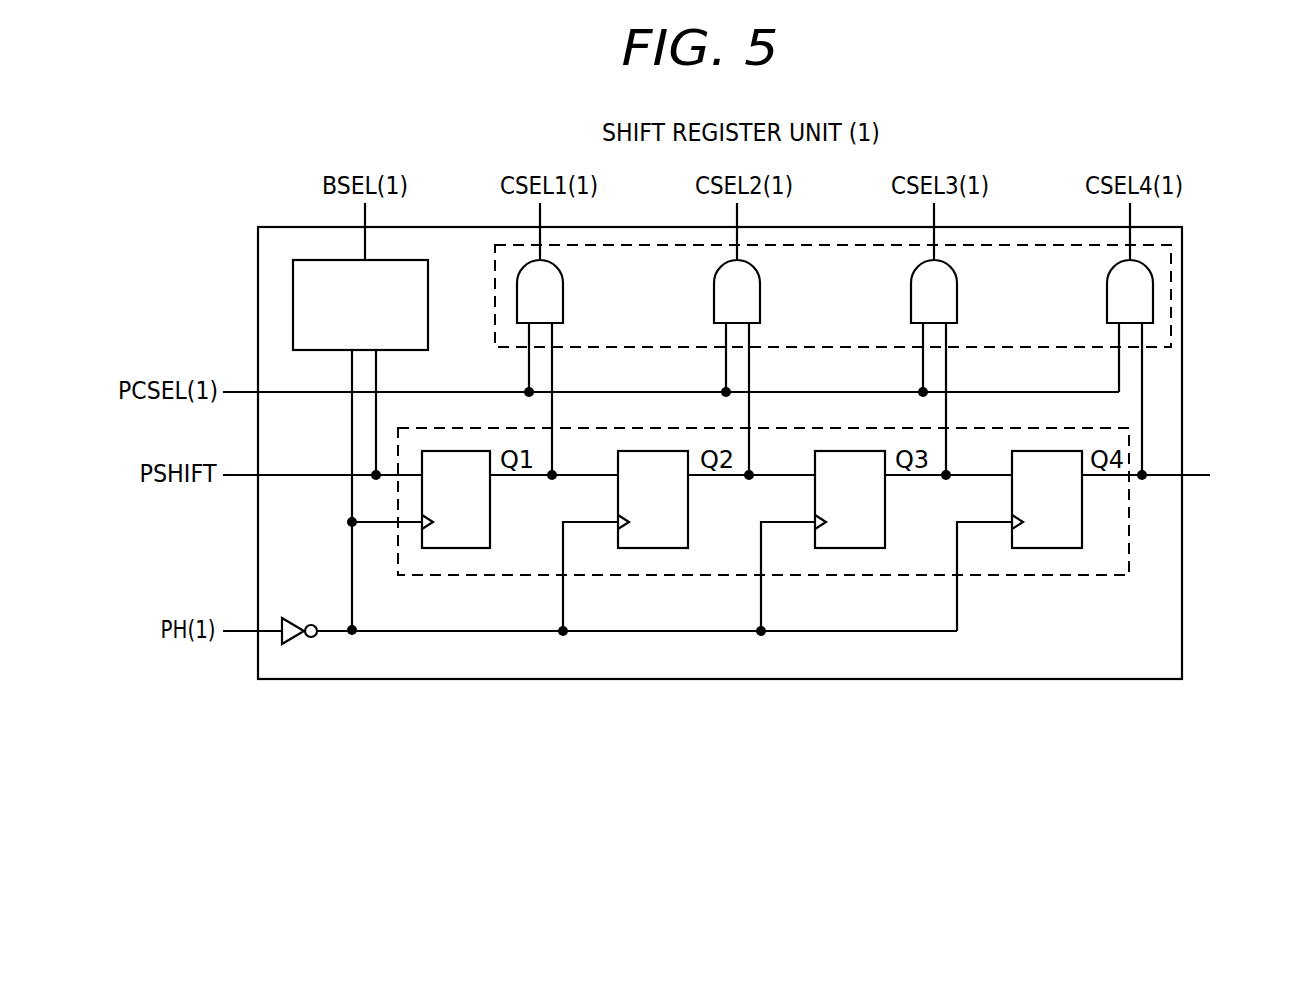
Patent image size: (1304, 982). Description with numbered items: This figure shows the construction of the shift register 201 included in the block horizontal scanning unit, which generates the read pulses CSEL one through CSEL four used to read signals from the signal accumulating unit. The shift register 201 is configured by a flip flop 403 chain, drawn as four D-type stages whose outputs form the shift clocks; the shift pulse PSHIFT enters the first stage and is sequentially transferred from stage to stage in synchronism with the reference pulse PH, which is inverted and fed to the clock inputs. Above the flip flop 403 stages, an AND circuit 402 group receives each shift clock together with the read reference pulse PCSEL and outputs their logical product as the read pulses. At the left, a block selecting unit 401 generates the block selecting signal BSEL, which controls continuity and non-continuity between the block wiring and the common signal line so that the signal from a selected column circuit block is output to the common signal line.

The shift register 201 is at (1033, 227).
The block selecting unit 401 is at (428, 302).
The AND circuit 402 is at (1171, 298).
The flip flop 403 is at (1129, 530).